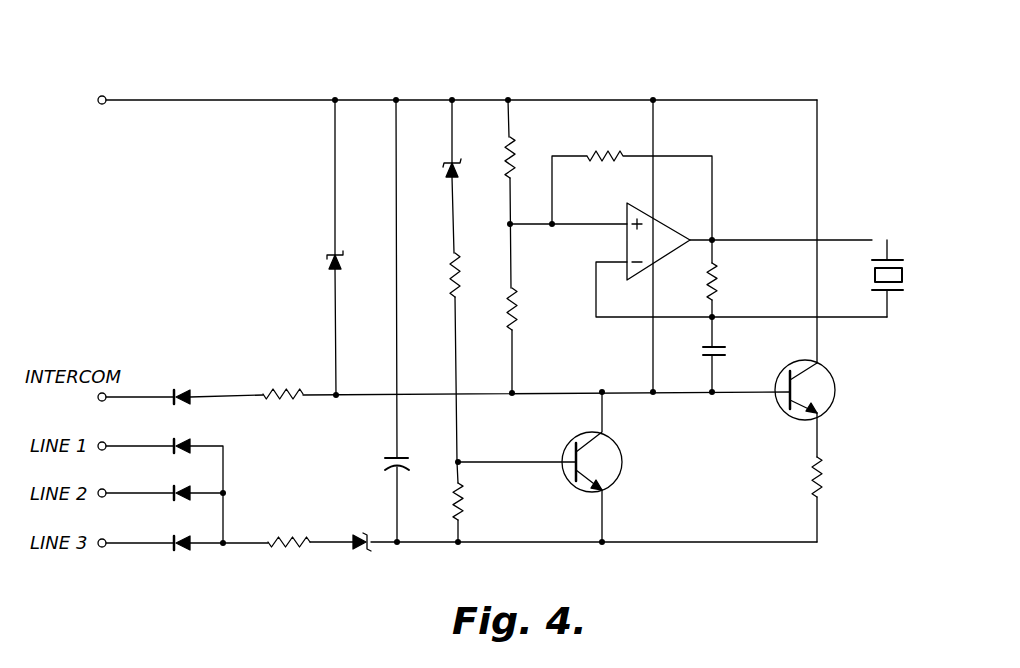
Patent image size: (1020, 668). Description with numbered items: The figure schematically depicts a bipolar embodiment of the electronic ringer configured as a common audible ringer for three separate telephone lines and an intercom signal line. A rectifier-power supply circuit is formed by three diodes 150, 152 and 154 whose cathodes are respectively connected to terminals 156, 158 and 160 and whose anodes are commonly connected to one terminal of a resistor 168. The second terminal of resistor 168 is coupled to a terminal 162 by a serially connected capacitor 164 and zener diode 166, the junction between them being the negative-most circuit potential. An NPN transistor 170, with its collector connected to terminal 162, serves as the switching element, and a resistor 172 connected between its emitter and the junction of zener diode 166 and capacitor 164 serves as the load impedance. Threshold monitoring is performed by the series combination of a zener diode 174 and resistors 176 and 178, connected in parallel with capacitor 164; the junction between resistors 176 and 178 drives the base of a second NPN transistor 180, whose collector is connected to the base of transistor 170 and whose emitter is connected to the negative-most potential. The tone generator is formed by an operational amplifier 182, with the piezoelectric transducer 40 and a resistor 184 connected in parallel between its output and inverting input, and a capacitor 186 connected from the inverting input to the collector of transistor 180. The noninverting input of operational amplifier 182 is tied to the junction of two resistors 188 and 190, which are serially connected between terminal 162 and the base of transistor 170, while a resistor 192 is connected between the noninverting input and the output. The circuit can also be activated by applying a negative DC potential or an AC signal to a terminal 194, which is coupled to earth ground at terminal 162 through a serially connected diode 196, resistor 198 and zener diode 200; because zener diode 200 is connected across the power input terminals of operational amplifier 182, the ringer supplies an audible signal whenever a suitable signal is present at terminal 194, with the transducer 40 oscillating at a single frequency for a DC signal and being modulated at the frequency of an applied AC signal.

The terminal 162 is at (104, 96).
The zener diode 200 is at (330, 255).
The zener diode 174 is at (455, 172).
The resistor 188 is at (514, 158).
The resistor 192 is at (604, 153).
The operational amplifier 182 is at (668, 225).
The resistor 184 is at (718, 277).
The capacitor 186 is at (718, 347).
The piezoelectric transducer 40 is at (890, 257).
The NPN transistor 170 is at (835, 378).
The resistor 172 is at (826, 473).
The second NPN transistor 180 is at (624, 478).
The resistor 178 is at (464, 503).
The resistor 176 is at (460, 270).
The resistor 190 is at (516, 320).
The capacitor 164 is at (405, 454).
The zener diode 166 is at (366, 550).
The resistor 168 is at (289, 549).
The resistor 198 is at (284, 389).
The terminal 194 is at (108, 393).
The diode 196 is at (185, 390).
The terminal 156 is at (108, 442).
The diode 150 is at (185, 440).
The terminal 158 is at (108, 489).
The diode 152 is at (196, 479).
The terminal 160 is at (104, 548).
The diode 154 is at (182, 550).